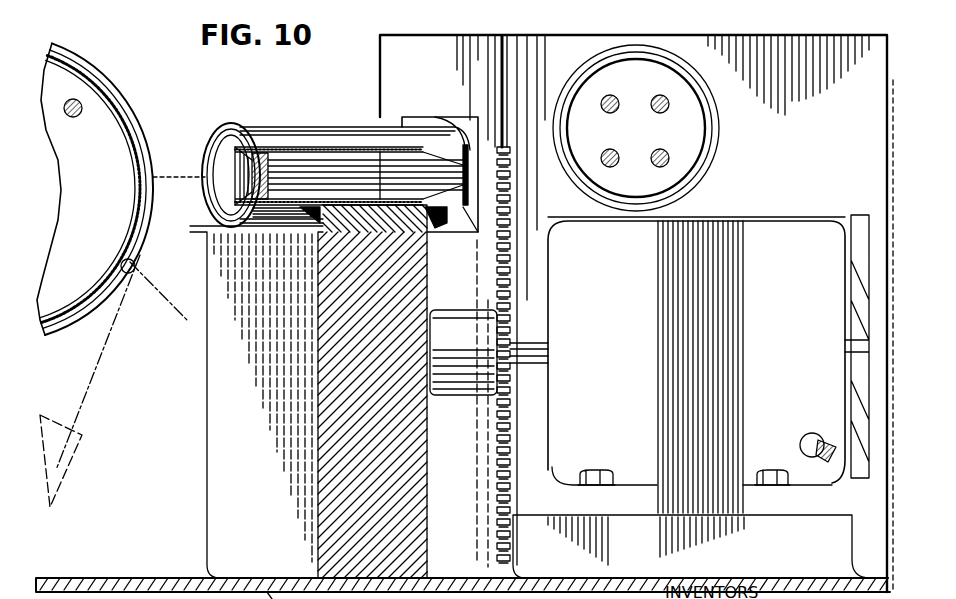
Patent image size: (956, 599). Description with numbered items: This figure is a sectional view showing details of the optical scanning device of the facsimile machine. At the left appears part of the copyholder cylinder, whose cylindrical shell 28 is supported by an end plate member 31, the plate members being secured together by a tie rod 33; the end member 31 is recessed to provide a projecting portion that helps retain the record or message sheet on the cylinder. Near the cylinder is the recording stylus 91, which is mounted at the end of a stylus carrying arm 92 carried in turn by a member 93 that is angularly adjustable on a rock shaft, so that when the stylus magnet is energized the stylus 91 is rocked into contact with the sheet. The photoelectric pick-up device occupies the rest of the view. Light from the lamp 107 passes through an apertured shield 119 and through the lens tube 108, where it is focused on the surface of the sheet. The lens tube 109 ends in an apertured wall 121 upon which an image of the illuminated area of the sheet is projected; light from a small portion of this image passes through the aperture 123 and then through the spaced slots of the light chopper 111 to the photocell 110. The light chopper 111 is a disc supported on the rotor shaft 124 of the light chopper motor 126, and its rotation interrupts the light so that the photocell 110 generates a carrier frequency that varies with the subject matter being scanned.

The cylindrical shell 28 is at (110, 100).
The end plate member 31 is at (137, 119).
The tie rod 33 is at (72, 118).
The stylus 91 is at (150, 283).
The stylus carrying arm 92 is at (100, 373).
The member 93 is at (72, 463).
The lamp 107 is at (458, 118).
The lens tube 108 is at (255, 125).
The lens tube 109 is at (312, 140).
The photocell 110 is at (704, 90).
The light chopper 111 is at (498, 456).
The apertured shield 119 is at (535, 40).
The apertured wall 121 is at (465, 150).
The aperture 123 is at (438, 228).
The rotor shaft 124 is at (540, 367).
The light chopper motor 126 is at (765, 222).